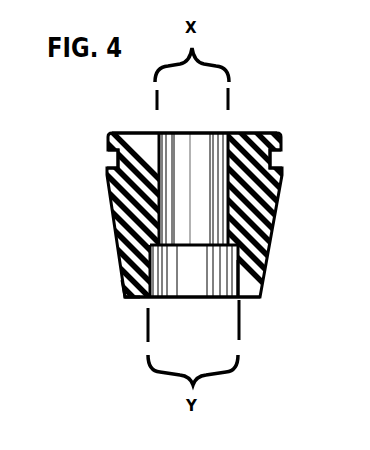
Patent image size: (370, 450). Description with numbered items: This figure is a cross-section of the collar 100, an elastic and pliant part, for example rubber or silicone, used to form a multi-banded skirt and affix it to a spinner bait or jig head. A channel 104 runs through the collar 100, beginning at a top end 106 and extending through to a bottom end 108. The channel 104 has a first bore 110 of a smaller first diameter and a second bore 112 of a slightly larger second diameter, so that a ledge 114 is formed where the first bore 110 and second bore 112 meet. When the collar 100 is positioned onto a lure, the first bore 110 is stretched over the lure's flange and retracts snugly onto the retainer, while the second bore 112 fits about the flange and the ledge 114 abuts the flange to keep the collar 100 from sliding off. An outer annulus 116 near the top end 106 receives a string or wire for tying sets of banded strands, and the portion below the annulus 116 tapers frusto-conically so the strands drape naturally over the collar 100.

The collar 100 is at (241, 91).
The channel 104 is at (216, 299).
The top end 106 is at (255, 132).
The bottom end 108 is at (134, 299).
The first bore 110 is at (162, 168).
The second bore 112 is at (232, 278).
The ledge 114 is at (153, 262).
The outer annulus 116 is at (110, 158).